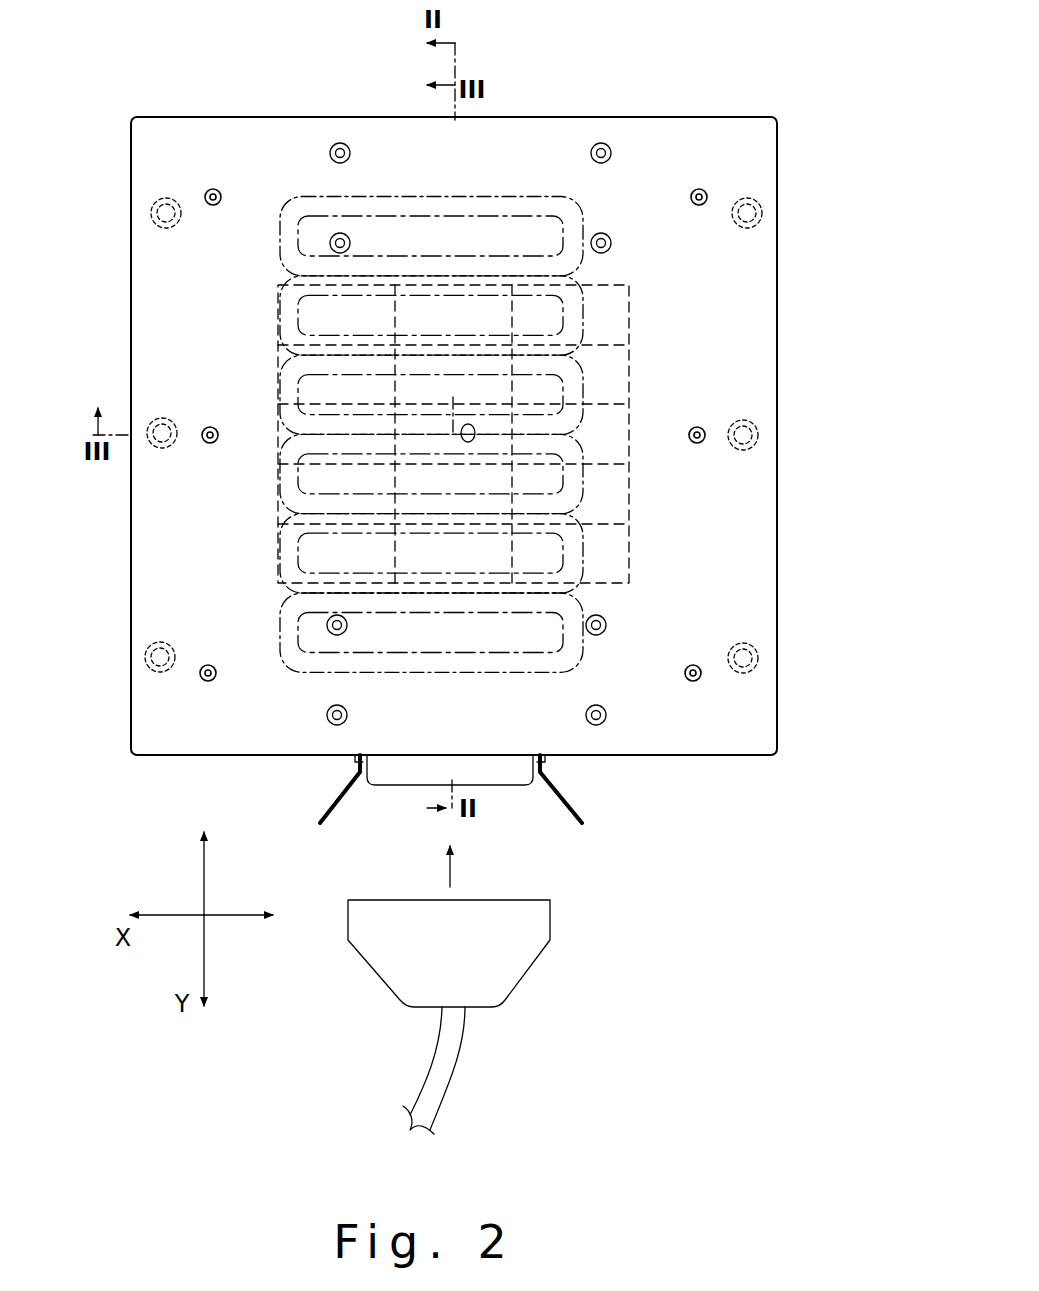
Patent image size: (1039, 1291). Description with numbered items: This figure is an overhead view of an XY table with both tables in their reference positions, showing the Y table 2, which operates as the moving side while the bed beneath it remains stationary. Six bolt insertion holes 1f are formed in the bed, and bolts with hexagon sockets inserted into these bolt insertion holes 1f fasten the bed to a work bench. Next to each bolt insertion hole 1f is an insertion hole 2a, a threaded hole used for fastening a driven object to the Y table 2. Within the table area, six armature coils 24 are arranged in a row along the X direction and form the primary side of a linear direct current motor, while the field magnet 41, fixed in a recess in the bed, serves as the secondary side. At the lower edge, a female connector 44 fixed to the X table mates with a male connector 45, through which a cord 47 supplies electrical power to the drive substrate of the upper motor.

The Y table 2 is at (721, 112).
The insertion hole 2a is at (211, 194).
The bolt insertion hole 1f is at (160, 212).
The armature coil 24 is at (583, 212).
The field magnet 41 is at (638, 409).
The female connector 44 is at (516, 791).
The male connector 45 is at (542, 971).
The cord 47 is at (453, 1053).